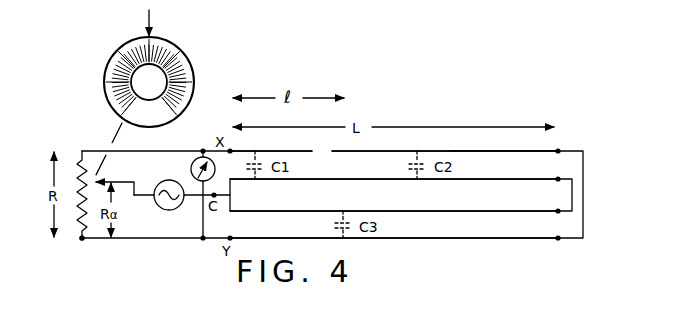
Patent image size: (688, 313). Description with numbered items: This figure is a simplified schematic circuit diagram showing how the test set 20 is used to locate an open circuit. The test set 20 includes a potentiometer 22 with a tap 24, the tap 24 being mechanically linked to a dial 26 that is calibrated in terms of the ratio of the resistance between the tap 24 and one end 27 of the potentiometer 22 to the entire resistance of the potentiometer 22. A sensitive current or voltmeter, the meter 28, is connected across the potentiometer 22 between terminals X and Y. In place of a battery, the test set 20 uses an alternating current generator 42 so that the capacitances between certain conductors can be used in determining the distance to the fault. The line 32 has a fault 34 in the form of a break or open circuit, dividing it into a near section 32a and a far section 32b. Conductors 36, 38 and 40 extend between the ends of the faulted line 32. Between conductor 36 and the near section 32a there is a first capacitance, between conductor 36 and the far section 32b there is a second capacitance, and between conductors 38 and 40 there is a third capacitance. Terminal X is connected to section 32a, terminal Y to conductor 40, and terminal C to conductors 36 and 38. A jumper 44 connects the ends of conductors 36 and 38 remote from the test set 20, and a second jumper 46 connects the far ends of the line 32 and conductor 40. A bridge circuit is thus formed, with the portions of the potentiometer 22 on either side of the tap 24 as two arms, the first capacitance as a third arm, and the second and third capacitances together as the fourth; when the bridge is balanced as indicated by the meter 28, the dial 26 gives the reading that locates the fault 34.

The test set 20 is at (181, 249).
The potentiometer 22 is at (82, 168).
The tap 24 is at (98, 181).
The dial 26 is at (189, 97).
The end of the potentiometer 27 is at (84, 240).
The meter 28 is at (191, 168).
The line 32 is at (395, 151).
The near section of the line 32a is at (302, 152).
The far section of the line 32b is at (482, 151).
The fault 34 is at (325, 153).
The conductor 36 is at (487, 181).
The conductor 38 is at (487, 212).
The conductor 40 is at (504, 240).
The alternating current generator 42 is at (161, 209).
The jumper 44 is at (584, 186).
The second jumper 46 is at (586, 215).